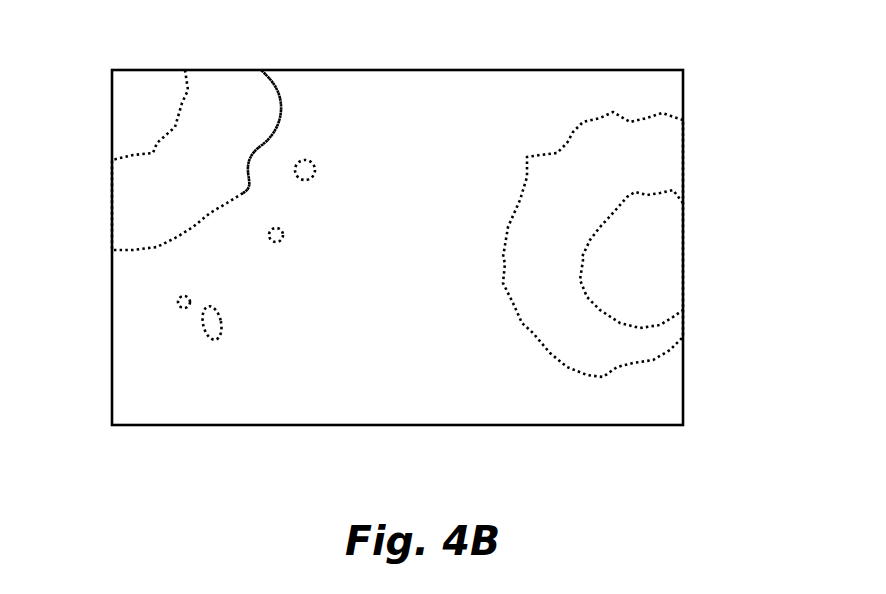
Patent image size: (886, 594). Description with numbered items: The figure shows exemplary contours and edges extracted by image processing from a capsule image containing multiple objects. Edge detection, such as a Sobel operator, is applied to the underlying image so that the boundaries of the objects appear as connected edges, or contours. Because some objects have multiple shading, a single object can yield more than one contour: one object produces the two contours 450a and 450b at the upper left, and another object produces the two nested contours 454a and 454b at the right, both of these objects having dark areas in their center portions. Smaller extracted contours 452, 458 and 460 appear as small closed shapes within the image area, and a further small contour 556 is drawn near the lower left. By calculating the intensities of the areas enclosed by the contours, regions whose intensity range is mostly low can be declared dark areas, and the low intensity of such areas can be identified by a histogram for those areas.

The contour 450a is at (181, 98).
The contour 450b is at (283, 108).
The contour 452 is at (310, 165).
The contour 454a is at (630, 121).
The contour 454b is at (633, 190).
The contour 458 is at (213, 325).
The contour 460 is at (278, 240).
The small circular region 556 is at (180, 303).